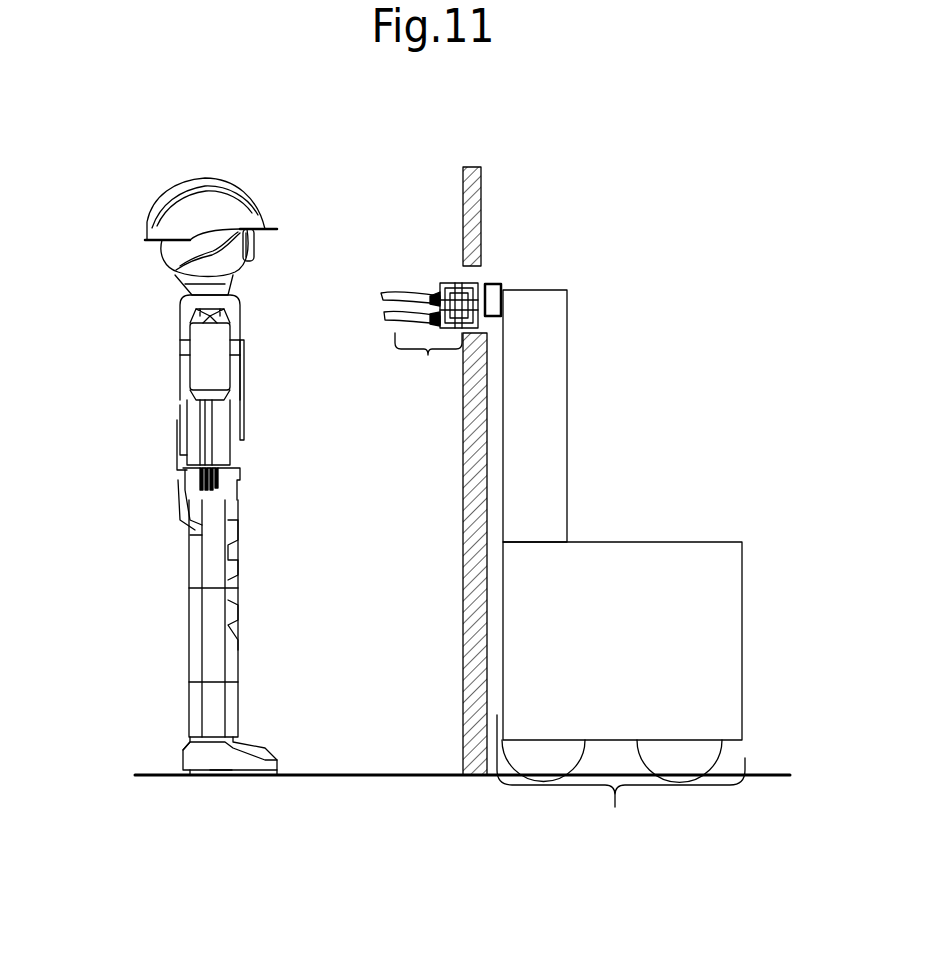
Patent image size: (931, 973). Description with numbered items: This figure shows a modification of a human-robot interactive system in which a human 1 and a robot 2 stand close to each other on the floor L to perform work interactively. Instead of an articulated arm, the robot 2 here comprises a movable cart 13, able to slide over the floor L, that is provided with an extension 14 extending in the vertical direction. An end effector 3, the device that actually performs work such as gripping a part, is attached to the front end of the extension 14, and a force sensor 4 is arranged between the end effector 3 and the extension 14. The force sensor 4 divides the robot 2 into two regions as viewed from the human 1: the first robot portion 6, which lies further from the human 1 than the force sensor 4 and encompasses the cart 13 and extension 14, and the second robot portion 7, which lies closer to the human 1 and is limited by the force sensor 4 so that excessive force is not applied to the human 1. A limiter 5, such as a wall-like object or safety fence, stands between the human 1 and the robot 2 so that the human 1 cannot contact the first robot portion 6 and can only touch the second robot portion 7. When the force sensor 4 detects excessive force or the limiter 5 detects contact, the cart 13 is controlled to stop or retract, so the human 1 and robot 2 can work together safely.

The human 1 is at (168, 222).
The robot 2 is at (643, 492).
The end effector 3 is at (432, 300).
The force sensor 4 is at (495, 297).
The limiter 5 is at (482, 170).
The first robot portion 6 is at (621, 779).
The second robot portion 7 is at (428, 367).
The movable cart 13 is at (702, 560).
The extension 14 is at (514, 403).
The floor L is at (332, 774).